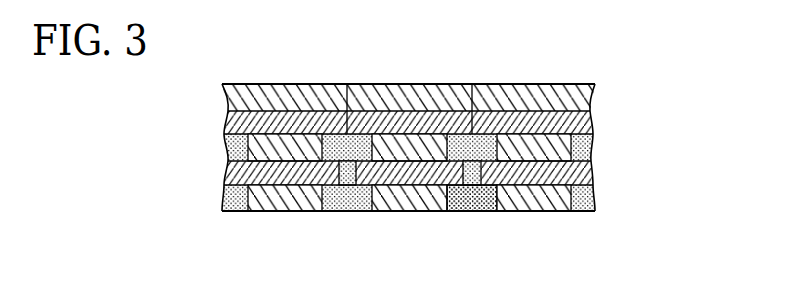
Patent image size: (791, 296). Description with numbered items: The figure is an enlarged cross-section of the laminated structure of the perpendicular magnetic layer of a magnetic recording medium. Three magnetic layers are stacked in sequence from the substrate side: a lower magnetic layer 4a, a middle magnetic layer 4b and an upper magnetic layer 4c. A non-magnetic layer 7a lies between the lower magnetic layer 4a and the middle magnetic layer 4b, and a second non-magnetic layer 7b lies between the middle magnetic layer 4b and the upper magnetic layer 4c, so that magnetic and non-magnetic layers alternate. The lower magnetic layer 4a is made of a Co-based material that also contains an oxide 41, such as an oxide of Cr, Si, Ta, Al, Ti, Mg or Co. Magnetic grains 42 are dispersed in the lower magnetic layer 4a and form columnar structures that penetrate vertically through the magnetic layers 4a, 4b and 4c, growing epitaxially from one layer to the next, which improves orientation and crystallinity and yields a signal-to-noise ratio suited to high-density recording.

The lower magnetic layer 4a is at (438, 229).
The middle magnetic layer 4b is at (580, 147).
The upper magnetic layer 4c is at (582, 97).
The non-magnetic layer 7a is at (577, 175).
The non-magnetic layer 7b is at (575, 123).
The oxide 41 is at (473, 197).
The magnetic grains 42 is at (413, 197).